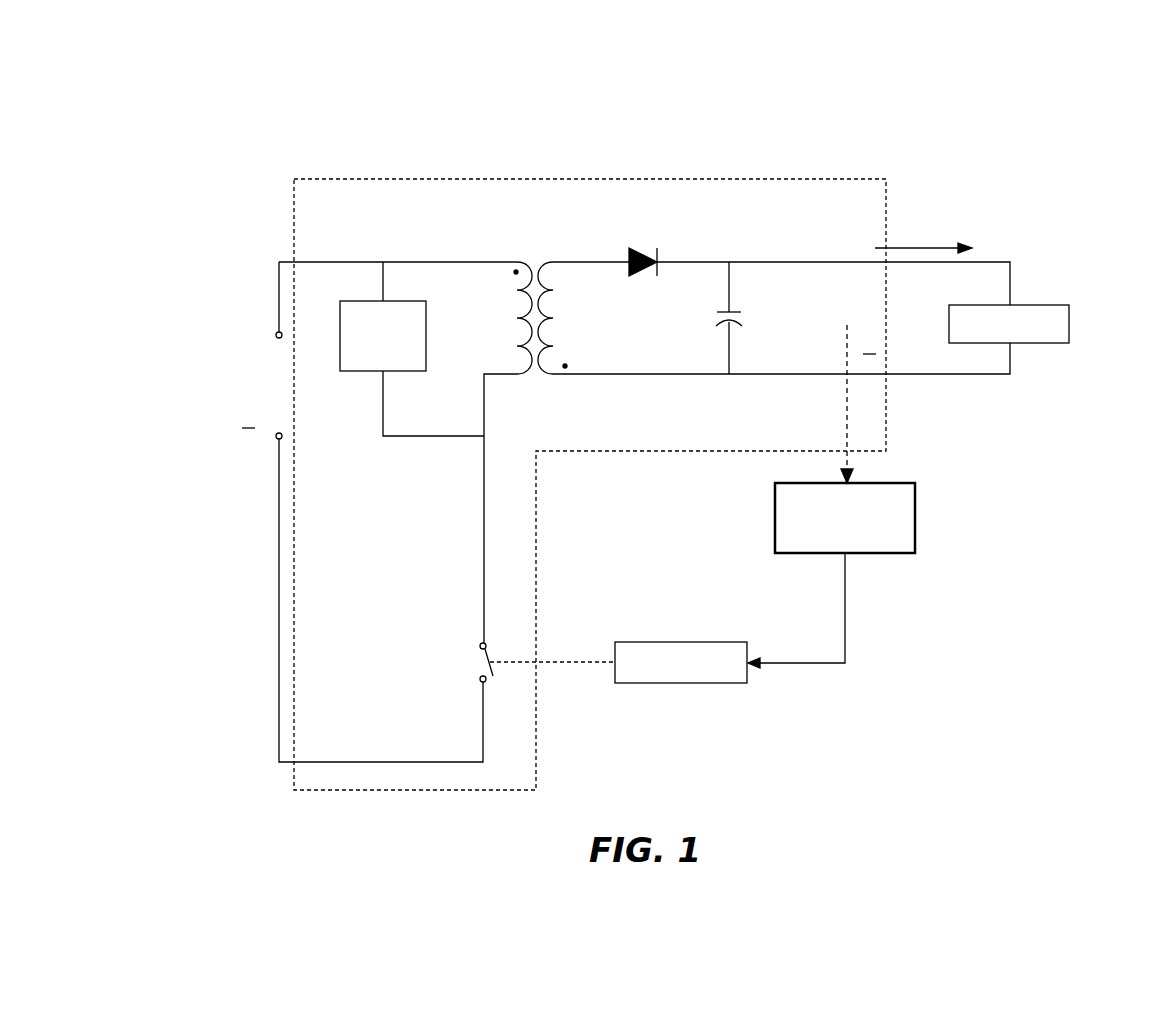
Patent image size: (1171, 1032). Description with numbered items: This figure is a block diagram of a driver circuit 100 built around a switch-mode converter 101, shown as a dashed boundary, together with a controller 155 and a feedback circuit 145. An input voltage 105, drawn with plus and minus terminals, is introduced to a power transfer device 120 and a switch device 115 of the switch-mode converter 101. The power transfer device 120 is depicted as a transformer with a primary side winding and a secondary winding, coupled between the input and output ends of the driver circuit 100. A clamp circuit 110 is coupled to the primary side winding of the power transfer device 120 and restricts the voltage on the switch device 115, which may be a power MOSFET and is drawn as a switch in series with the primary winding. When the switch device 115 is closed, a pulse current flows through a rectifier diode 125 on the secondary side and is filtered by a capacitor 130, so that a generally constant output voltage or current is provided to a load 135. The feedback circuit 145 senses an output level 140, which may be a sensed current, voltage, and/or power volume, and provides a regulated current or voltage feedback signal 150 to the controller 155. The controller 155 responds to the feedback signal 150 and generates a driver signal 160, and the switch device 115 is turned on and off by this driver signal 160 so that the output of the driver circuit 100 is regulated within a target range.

The driver circuit 100 is at (1078, 138).
The switch-mode converter 101 is at (889, 190).
The input voltage 105 is at (237, 368).
The clamp circuit 110 is at (374, 377).
The switch device 115 is at (477, 640).
The power transfer device 120 is at (518, 249).
The rectifier diode 125 is at (642, 248).
The capacitor 130 is at (749, 323).
The load 135 is at (1042, 302).
The output level 140 is at (810, 432).
The feedback circuit 145 is at (773, 503).
The feedback signal 150 is at (792, 617).
The controller 155 is at (675, 640).
The driver signal 160 is at (603, 655).